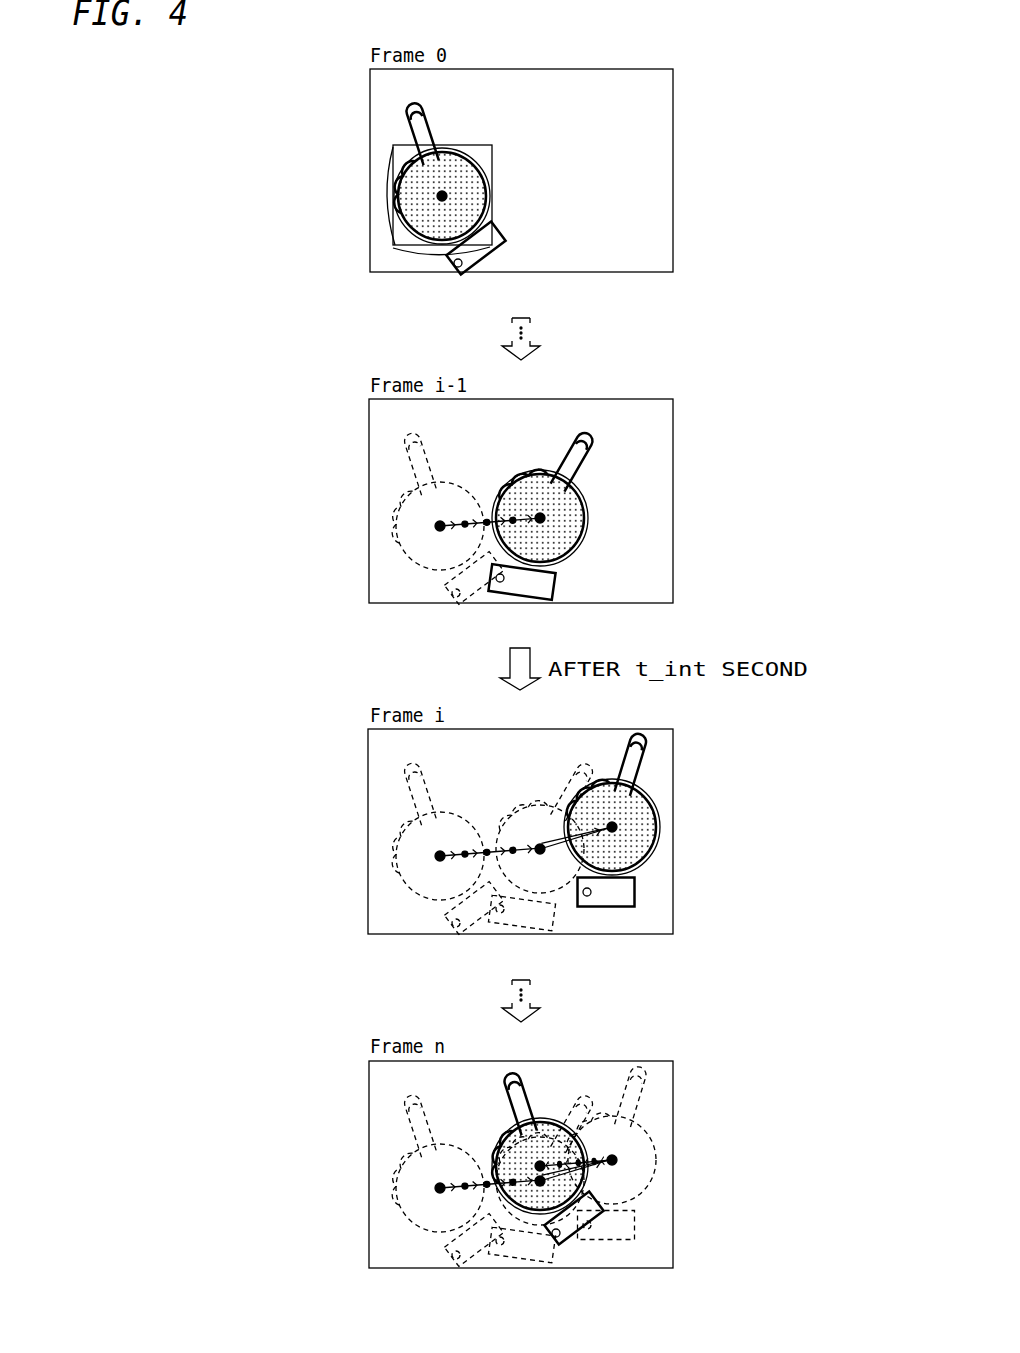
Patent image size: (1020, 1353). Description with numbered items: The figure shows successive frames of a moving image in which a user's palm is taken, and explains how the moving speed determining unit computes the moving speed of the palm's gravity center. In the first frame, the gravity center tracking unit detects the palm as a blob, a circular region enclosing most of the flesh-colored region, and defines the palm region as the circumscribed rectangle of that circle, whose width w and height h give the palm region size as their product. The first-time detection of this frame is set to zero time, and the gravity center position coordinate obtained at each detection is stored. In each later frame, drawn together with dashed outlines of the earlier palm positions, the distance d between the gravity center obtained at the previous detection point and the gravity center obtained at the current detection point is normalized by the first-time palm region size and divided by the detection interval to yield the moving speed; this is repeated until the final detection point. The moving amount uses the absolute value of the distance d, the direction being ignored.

The height of the circumscribed rectangle h is at (385, 198).
The width of the circumscribed rectangle w is at (400, 258).
The distance between gravity centers d is at (548, 838).